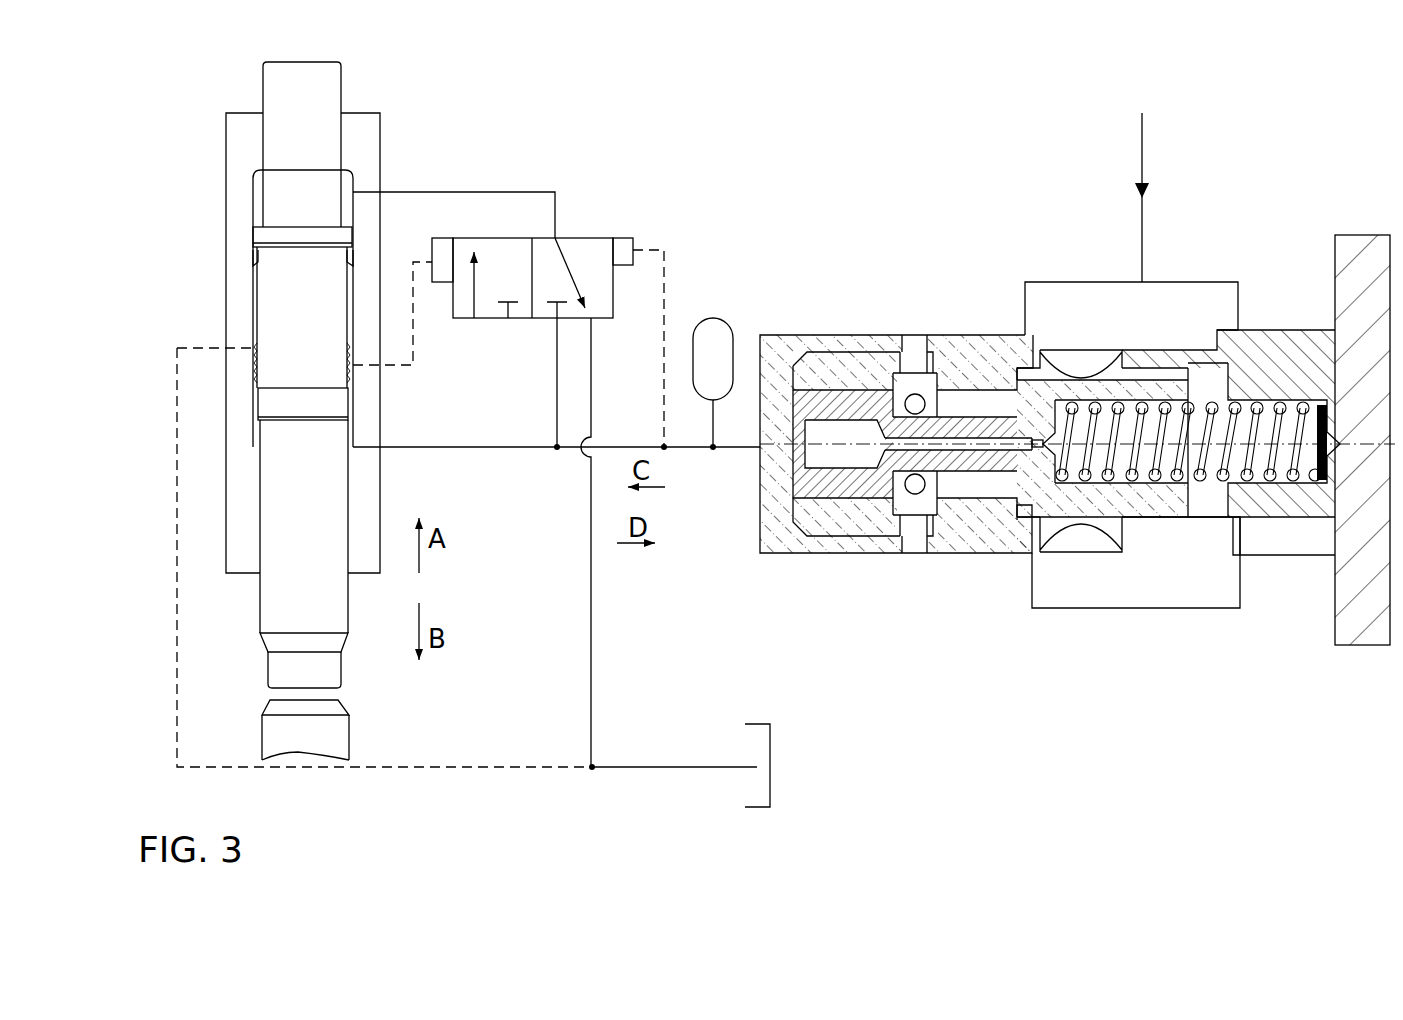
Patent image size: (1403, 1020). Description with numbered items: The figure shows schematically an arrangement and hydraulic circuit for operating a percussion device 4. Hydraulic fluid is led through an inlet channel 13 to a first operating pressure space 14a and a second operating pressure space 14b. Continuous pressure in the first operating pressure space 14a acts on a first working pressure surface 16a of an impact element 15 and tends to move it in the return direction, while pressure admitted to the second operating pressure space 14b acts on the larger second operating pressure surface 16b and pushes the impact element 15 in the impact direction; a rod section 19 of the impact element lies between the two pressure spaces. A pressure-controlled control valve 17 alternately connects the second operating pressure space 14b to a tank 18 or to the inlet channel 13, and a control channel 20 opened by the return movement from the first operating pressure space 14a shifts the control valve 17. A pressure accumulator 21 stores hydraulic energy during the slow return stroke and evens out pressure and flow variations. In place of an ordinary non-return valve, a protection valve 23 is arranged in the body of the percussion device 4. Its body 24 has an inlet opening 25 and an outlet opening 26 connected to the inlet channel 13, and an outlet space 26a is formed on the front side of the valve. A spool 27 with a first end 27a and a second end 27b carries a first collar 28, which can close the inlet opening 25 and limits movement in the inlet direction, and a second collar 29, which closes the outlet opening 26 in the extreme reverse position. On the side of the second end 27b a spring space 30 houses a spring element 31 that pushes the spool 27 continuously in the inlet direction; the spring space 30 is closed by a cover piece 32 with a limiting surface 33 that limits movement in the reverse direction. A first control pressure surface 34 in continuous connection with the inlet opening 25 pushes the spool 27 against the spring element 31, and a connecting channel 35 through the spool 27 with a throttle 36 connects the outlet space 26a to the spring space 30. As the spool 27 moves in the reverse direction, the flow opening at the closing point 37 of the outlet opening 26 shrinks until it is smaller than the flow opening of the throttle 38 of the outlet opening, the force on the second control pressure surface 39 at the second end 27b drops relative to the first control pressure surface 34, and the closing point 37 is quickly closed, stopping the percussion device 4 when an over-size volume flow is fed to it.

The percussion device 4 is at (452, 104).
The inlet channel 13 is at (736, 447).
The first operating pressure space 14a is at (258, 420).
The second operating pressure space 14b is at (255, 225).
The impact element 15 is at (275, 598).
The first working pressure surface 16a is at (303, 425).
The second operating pressure surface 16b is at (293, 222).
The control valve 17 is at (581, 245).
The tank 18 is at (770, 787).
The rod section 19 is at (300, 378).
The control channel 20 is at (413, 332).
The pressure accumulator 21 is at (717, 335).
The protection valve 23 is at (1265, 173).
The body 24 is at (858, 518).
The inlet opening 25 is at (1082, 372).
The outlet opening 26 is at (899, 330).
The outlet space 26a is at (773, 500).
The spool 27 is at (862, 405).
The first end 27a is at (864, 362).
The second end 27b is at (1158, 322).
The first collar 28 is at (1012, 378).
The second collar 29 is at (918, 500).
The spring space 30 is at (1208, 378).
The spring element 31 is at (1158, 452).
The cover piece 32 is at (1355, 300).
The limiting surface 33 is at (1223, 519).
The first control pressure surface 34 is at (1107, 500).
The connecting channel 35 is at (960, 447).
The throttle 36 is at (1030, 450).
The closing point 37 is at (934, 380).
The throttle of the outlet opening 38 is at (913, 362).
The second control pressure surface 39 is at (1203, 497).